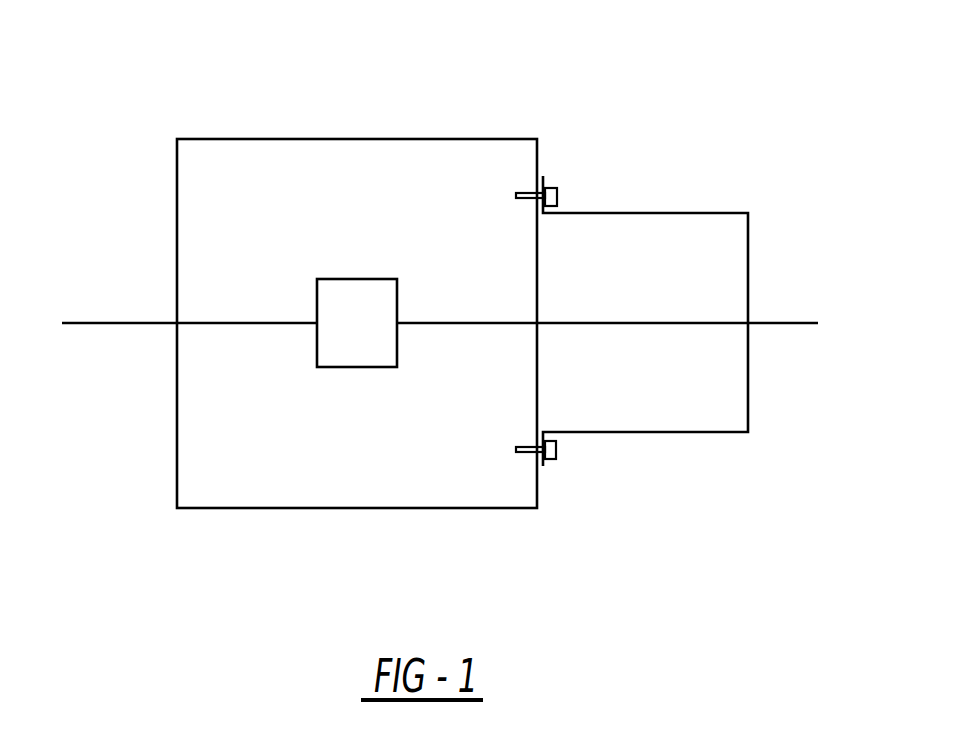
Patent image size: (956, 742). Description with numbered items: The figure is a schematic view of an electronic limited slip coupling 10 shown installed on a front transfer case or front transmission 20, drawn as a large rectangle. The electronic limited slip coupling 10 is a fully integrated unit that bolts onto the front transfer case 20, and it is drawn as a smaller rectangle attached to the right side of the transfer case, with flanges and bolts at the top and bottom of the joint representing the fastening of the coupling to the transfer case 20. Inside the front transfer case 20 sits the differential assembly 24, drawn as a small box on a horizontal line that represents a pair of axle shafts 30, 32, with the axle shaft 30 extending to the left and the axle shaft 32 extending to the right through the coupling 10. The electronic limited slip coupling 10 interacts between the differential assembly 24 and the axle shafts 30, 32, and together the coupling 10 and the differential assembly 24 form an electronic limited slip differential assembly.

The electronic limited slip coupling 10 is at (649, 236).
The front transfer case 20 is at (283, 182).
The differential assembly 24 is at (357, 279).
The axle shaft 30 is at (124, 322).
The axle shaft 32 is at (800, 322).